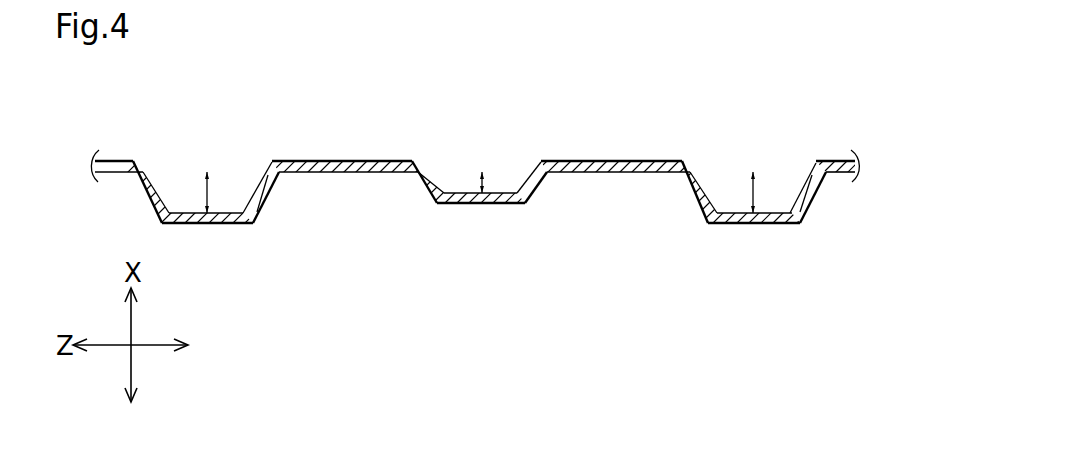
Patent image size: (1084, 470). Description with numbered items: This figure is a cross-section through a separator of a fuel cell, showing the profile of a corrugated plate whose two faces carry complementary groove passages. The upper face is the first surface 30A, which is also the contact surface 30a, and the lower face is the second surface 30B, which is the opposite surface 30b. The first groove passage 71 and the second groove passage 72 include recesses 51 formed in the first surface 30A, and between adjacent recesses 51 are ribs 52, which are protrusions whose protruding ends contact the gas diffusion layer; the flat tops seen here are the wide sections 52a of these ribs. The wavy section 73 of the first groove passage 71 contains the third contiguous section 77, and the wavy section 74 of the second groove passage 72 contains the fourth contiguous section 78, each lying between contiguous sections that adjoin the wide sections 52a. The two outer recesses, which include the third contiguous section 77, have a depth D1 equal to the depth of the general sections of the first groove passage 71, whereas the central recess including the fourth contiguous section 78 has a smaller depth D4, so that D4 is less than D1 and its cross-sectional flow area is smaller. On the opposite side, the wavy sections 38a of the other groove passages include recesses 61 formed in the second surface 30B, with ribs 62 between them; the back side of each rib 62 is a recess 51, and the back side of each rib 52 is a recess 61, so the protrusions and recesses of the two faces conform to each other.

The contact surface 30a is at (840, 158).
The first surface 30A is at (878, 132).
The surface 30b is at (846, 175).
The second surface 30B is at (884, 206).
The wavy section 38a is at (484, 205).
The recess 51 is at (505, 236).
The rib 52 is at (485, 166).
The wide section 52a is at (485, 166).
The recess 61 is at (352, 173).
The rib 62 is at (505, 236).
The first groove passage 71 is at (530, 146).
The second groove passage 72 is at (546, 153).
The wavy section 73 is at (262, 174).
The wavy section 74 is at (538, 168).
The third contiguous section 77 is at (223, 215).
The fourth contiguous section 78 is at (496, 195).
The depth D1 is at (197, 185).
The depth D4 is at (470, 178).